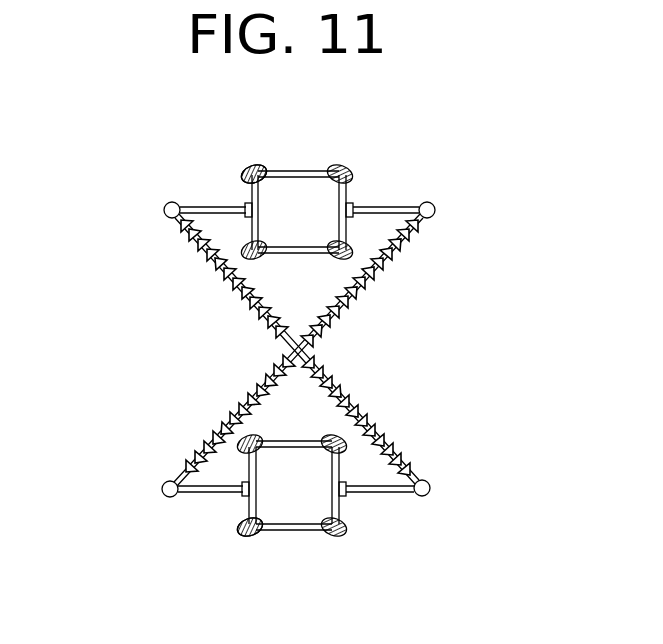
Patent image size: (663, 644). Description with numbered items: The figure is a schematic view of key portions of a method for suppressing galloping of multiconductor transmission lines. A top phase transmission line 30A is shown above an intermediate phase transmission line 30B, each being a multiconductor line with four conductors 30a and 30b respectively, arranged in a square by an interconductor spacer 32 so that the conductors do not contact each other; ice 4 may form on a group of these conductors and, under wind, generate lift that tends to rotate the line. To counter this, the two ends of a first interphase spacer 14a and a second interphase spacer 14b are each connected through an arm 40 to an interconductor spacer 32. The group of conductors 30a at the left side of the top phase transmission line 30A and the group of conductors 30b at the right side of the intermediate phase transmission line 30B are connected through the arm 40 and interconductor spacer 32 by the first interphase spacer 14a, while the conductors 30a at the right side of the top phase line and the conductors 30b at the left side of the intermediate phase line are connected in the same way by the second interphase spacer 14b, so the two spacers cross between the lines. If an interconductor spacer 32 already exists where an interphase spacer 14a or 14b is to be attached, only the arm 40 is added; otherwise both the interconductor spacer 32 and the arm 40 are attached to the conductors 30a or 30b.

The ice 4 is at (247, 168).
The first interphase spacer 14a is at (247, 305).
The second interphase spacer 14b is at (352, 303).
The top phase transmission line 30A is at (307, 206).
The intermediate phase transmission line 30B is at (357, 489).
The conductors 30a is at (286, 139).
The conductors 30b is at (250, 438).
The interconductor spacer 32 is at (348, 185).
The arm 40 is at (200, 206).